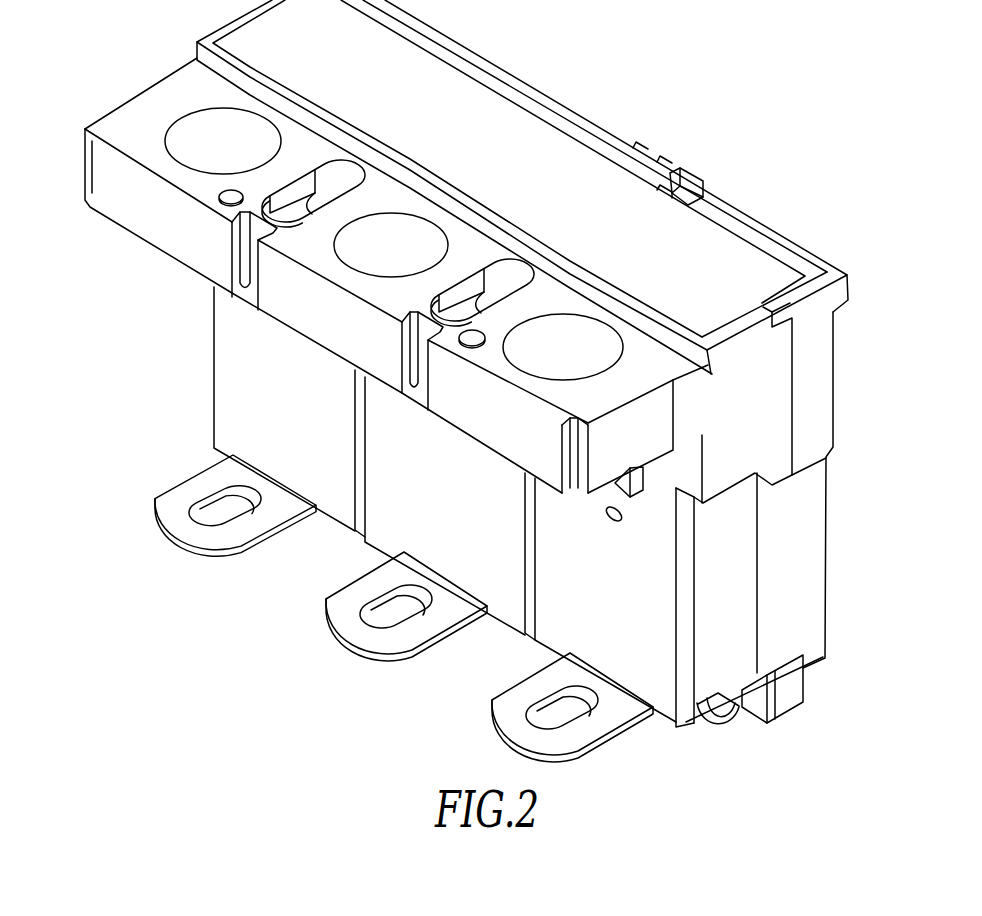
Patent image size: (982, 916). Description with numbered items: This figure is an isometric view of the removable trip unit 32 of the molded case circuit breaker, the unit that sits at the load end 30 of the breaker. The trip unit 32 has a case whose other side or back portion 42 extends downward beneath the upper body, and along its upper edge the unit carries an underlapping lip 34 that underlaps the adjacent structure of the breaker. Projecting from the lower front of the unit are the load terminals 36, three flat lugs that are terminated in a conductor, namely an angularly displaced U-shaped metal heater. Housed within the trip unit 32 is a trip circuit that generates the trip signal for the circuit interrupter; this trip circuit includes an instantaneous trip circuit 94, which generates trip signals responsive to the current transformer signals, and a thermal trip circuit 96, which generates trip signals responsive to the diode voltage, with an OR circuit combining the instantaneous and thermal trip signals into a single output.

The load end 30 is at (84, 129).
The removable trip unit 32 is at (410, 736).
The underlapping lip 34 is at (846, 276).
The load terminal 36 is at (251, 538).
The back portion 42 is at (834, 388).
The instantaneous trip circuit 94 is at (506, 148).
The thermal trip circuit 96 is at (549, 176).